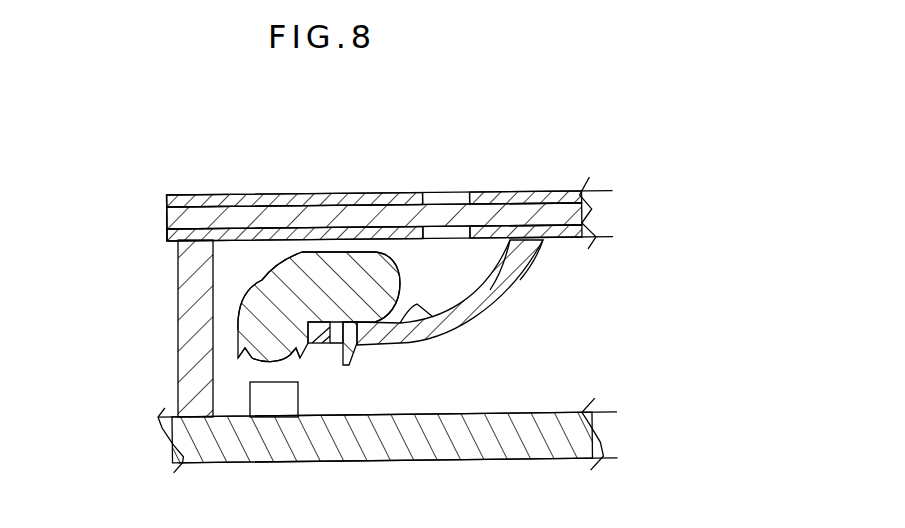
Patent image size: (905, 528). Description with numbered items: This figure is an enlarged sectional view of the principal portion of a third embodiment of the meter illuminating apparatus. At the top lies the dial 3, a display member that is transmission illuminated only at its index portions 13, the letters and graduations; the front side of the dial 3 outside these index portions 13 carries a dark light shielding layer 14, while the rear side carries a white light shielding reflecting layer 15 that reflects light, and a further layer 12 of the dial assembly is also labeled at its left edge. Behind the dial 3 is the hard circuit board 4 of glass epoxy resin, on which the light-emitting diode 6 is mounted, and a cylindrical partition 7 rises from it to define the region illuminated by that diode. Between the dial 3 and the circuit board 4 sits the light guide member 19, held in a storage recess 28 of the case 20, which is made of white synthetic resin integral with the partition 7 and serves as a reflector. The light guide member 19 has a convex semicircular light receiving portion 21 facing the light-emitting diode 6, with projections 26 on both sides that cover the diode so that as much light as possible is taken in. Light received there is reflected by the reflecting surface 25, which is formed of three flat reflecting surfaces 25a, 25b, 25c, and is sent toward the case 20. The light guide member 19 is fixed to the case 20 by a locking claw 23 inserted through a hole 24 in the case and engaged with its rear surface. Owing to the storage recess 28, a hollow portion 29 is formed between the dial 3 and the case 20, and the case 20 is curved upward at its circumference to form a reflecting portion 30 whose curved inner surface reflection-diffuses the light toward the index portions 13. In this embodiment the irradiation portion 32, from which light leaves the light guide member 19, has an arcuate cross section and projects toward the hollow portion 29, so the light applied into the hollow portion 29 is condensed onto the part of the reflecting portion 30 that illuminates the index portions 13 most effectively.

The dial 3 is at (176, 196).
The hard circuit board 4 is at (470, 437).
The light-emitting diode 6 is at (263, 407).
The cylindrical partition 7 is at (187, 265).
The upper plate 12 is at (167, 216).
The index portion 13 is at (443, 195).
The light shielding layer 14 is at (532, 194).
The light shielding reflecting layer 15 is at (570, 243).
The light guide member 19 is at (351, 260).
The case 20 is at (520, 274).
The light receiving portion 21 is at (265, 360).
The locking claw 23 is at (356, 348).
The hole 24 is at (342, 340).
The reflecting surface 25 is at (251, 279).
The reflecting surface 25a is at (247, 287).
The reflecting surface 25b is at (258, 277).
The reflecting surface 25c is at (297, 255).
The projections 26 is at (243, 352).
The storage recess 28 is at (421, 323).
The hollow portion 29 is at (437, 262).
The reflecting portion 30 is at (481, 263).
The irradiation portion 32 is at (403, 272).